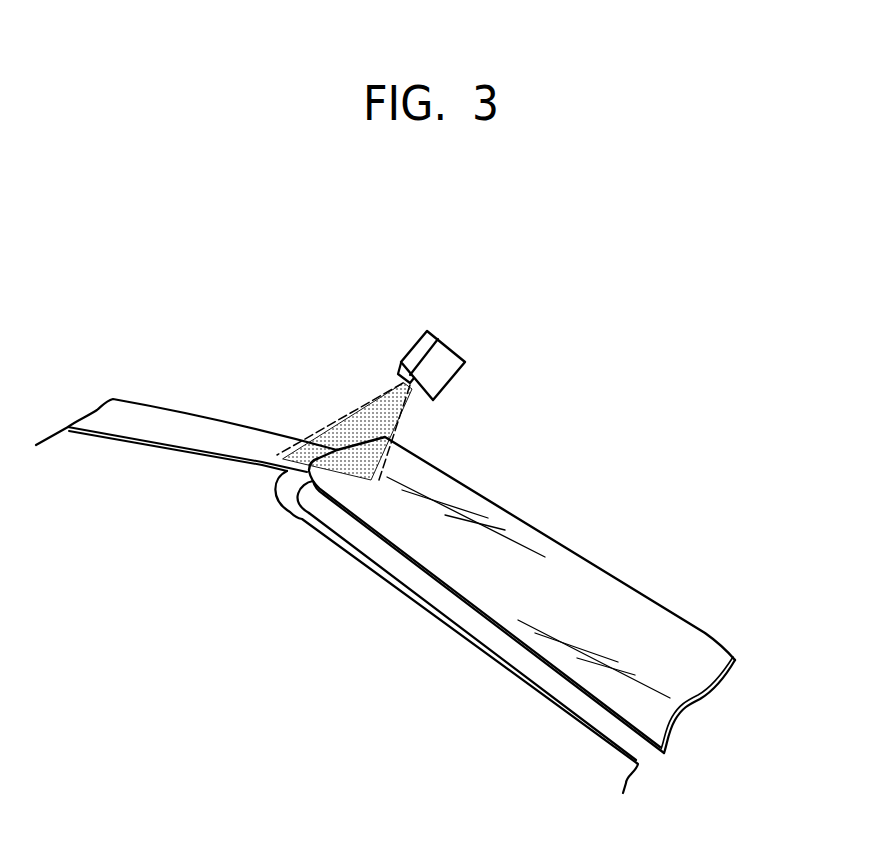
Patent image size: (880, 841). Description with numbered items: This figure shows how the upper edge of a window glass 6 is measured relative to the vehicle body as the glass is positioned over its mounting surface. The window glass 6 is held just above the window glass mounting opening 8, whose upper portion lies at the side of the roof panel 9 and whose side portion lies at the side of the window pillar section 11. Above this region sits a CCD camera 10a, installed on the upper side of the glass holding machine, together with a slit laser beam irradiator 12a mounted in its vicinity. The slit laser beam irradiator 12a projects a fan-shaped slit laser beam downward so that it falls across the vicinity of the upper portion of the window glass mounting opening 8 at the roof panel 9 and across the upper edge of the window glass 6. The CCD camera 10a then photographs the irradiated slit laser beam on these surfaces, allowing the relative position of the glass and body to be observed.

The window glass 6 is at (542, 542).
The window glass mounting opening 8 is at (343, 527).
The roof panel 9 is at (180, 420).
The CCD camera 10a is at (427, 343).
The window pillar section 11 is at (557, 708).
The slit laser beam irradiator 12a is at (452, 362).